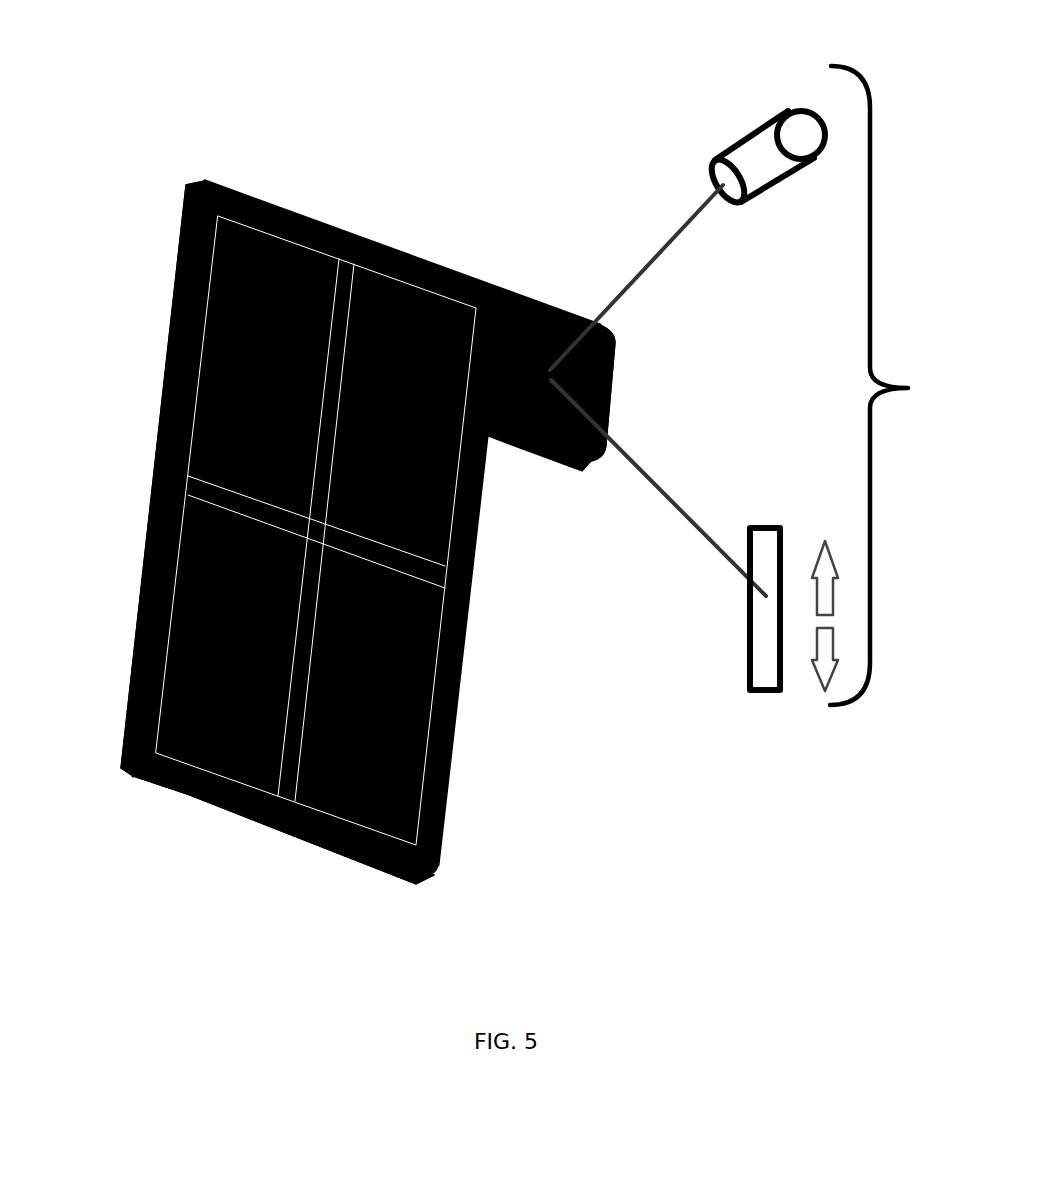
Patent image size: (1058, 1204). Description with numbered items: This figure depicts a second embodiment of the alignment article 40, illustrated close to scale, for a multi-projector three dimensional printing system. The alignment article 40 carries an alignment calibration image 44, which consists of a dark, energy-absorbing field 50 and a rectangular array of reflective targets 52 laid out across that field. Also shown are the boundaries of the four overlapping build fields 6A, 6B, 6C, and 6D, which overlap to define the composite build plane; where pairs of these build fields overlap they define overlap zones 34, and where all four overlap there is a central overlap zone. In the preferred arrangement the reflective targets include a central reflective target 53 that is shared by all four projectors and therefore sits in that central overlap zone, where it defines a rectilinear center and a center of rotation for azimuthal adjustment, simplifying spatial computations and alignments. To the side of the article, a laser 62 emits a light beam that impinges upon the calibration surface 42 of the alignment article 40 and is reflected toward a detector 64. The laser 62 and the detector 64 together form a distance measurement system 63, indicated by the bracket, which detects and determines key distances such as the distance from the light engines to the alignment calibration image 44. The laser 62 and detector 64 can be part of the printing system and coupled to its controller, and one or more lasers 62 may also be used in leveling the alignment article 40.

The build field 6A is at (177, 233).
The build field 6B is at (500, 285).
The build field 6C is at (147, 507).
The build field 6D is at (453, 657).
The overlap zone 34 is at (308, 213).
The alignment article 40 is at (404, 193).
The calibration surface 42 is at (604, 360).
The alignment calibration image 44 is at (452, 233).
The dark field 50 is at (433, 830).
The reflective targets 52 is at (437, 797).
The central reflective target 53 is at (163, 382).
The laser 62 is at (790, 117).
The distance measurement system 63 is at (888, 385).
The detector 64 is at (757, 543).